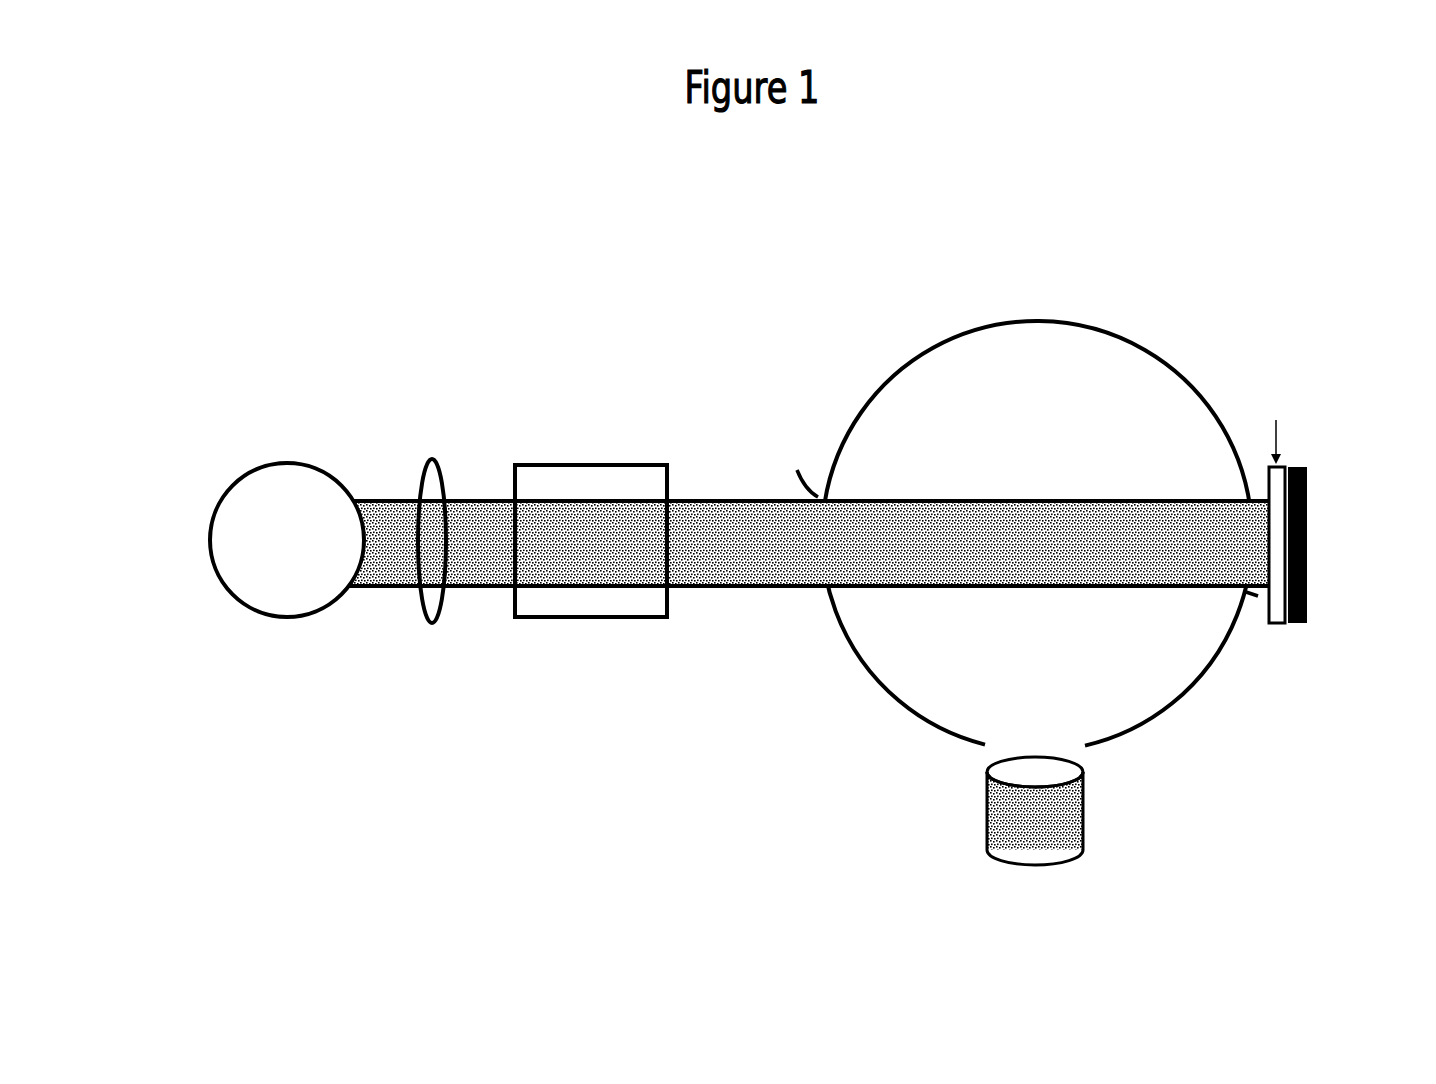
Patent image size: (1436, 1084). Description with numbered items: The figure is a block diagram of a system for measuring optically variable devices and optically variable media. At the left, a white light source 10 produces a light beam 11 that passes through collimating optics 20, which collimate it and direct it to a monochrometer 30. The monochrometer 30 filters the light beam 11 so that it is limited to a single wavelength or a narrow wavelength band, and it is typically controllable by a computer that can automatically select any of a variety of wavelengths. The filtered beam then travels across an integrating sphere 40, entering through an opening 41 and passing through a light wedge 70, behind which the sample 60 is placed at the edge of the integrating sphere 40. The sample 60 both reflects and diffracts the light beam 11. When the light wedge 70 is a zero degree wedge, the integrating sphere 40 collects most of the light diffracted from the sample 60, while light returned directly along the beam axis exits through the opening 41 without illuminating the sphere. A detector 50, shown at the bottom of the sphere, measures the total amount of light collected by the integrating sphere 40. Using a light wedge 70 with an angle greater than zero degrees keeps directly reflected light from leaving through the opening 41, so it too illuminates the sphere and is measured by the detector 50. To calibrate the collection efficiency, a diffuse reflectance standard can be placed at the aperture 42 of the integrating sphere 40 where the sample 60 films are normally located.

The white light source 10 is at (222, 582).
The light beam 11 is at (743, 588).
The collimating optics 20 is at (433, 459).
The monochrometer 30 is at (605, 617).
The integrating sphere 40 is at (868, 405).
The opening 41 is at (794, 463).
The aperture 42 is at (1252, 593).
The detector 50 is at (1035, 866).
The sample 60 is at (1308, 508).
The light wedge 70 is at (1277, 623).